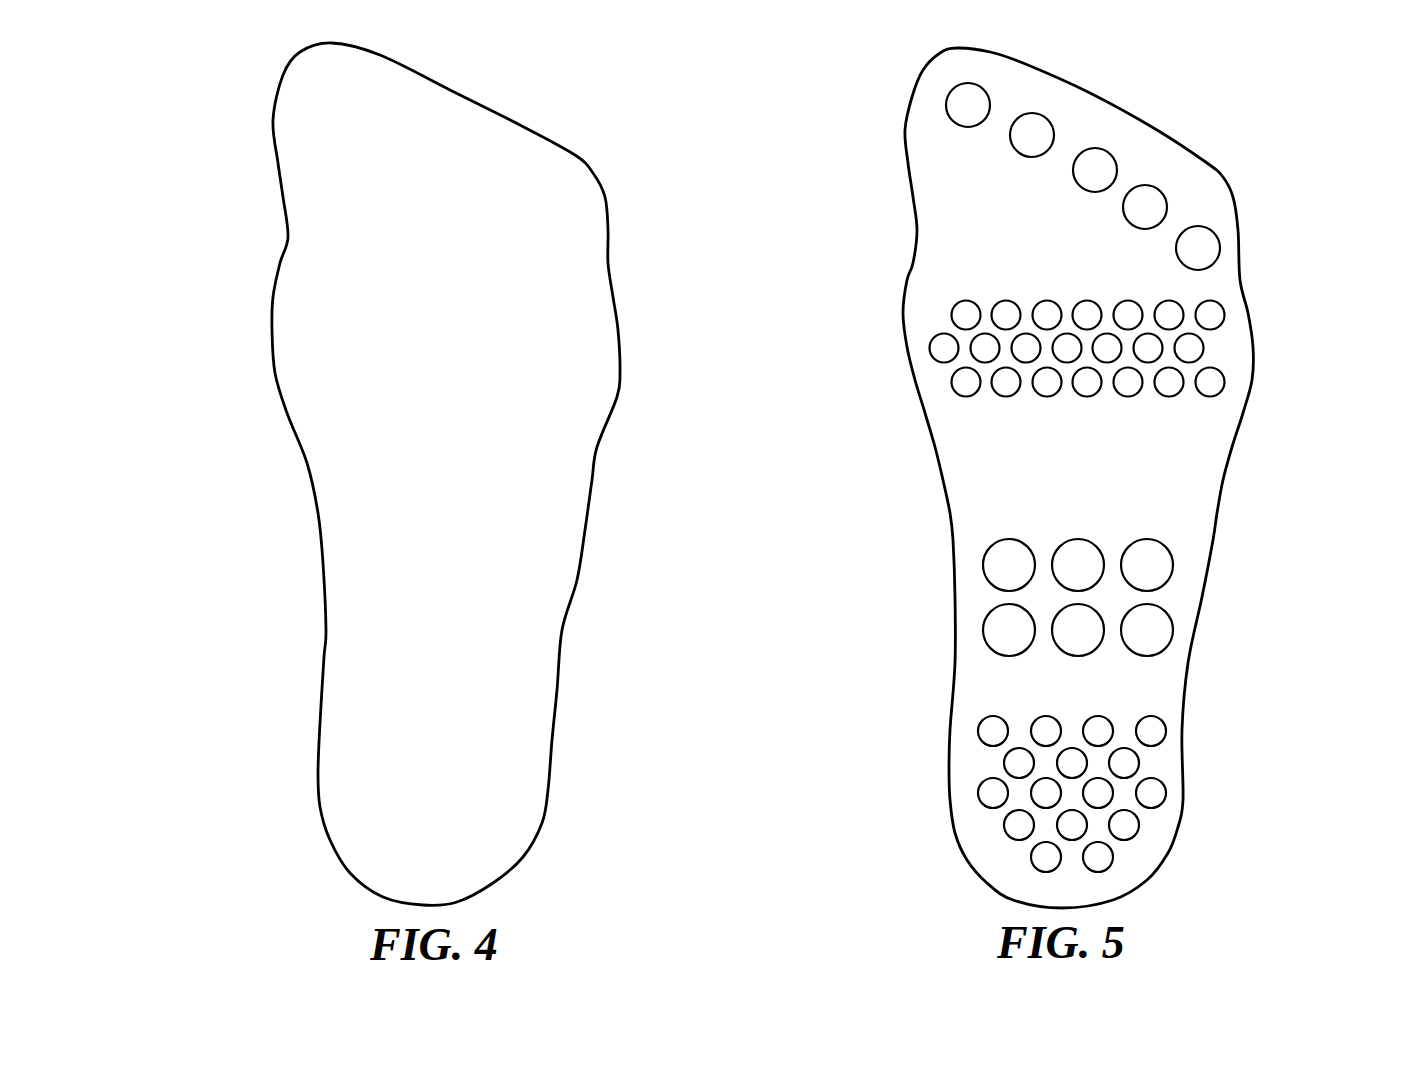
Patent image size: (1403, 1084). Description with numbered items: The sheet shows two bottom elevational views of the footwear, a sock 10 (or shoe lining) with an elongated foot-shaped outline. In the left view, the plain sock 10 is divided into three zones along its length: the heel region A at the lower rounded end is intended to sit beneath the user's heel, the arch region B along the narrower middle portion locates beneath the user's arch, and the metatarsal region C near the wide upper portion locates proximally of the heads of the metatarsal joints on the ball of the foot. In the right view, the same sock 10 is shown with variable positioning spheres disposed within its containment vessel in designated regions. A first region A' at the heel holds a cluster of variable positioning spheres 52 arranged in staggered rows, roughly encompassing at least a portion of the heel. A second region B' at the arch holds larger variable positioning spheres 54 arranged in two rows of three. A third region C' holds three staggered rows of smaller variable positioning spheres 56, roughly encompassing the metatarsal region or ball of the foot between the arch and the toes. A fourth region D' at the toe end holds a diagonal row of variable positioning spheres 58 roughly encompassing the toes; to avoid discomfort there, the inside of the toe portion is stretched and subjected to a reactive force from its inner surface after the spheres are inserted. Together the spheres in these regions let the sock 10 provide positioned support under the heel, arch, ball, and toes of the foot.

In FIG. 4, the sock 10 is at (285, 610).
In FIG. 5, the sock 10 is at (912, 510).
In FIG. 5, the variable positioning spheres 52 is at (993, 793).
In FIG. 5, the variable positioning spheres 54 is at (1003, 632).
In FIG. 5, the variable positioning spheres 56 is at (942, 348).
In FIG. 5, the variable positioning spheres 58 is at (962, 102).
In FIG. 4, the heel region A is at (608, 808).
In FIG. 4, the arch region B is at (635, 580).
In FIG. 4, the metatarsal region C is at (687, 370).
In FIG. 5, the first region A' is at (1255, 808).
In FIG. 5, the second region B' is at (1285, 580).
In FIG. 5, the third region C' is at (1337, 370).
In FIG. 5, the fourth region D' is at (843, 145).